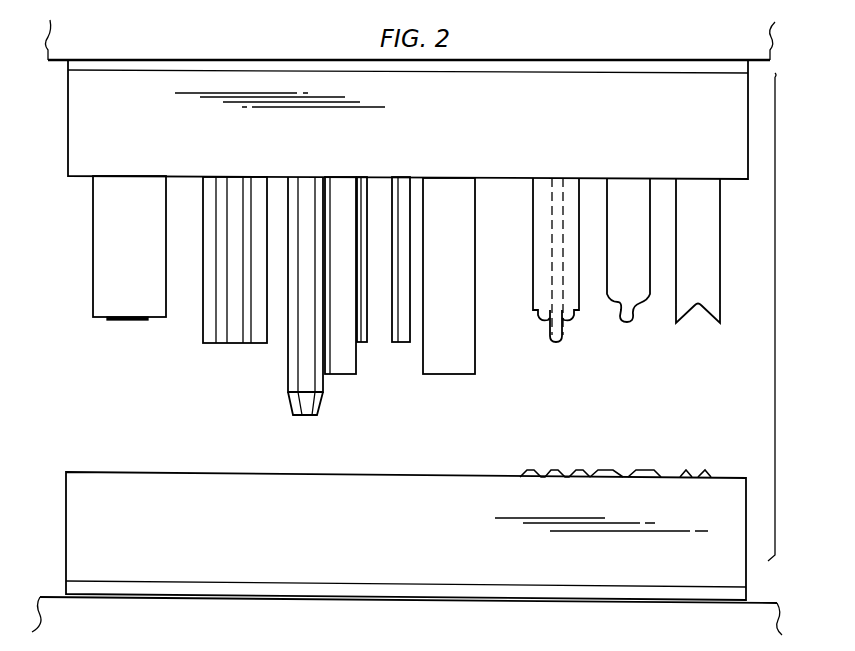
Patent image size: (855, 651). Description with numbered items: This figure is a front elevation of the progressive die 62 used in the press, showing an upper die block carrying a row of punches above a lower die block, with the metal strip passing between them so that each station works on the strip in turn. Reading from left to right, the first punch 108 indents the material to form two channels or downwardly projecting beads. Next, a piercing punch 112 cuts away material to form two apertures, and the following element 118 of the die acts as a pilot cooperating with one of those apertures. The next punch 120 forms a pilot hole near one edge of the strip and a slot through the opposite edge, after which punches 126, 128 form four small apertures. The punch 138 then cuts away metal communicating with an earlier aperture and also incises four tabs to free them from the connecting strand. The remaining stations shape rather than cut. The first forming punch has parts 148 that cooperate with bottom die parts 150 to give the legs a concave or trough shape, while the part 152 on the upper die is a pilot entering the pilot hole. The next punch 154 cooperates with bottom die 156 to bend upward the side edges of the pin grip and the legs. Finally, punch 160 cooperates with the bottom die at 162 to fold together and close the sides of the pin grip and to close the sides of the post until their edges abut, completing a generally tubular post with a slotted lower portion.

The die 62 is at (397, 538).
The punch 108 is at (100, 299).
The punch 112 is at (237, 344).
The pilot element 118 is at (322, 408).
The punch 120 is at (348, 375).
The punch 126 is at (363, 343).
The punch 128 is at (403, 343).
The punch 138 is at (477, 370).
The punch parts 148 is at (543, 320).
The pilot 152 is at (559, 342).
The punch 154 is at (647, 302).
The punch 160 is at (720, 316).
The bottom die parts 150 is at (545, 472).
The bottom die 156 is at (623, 475).
The bottom die 162 is at (698, 475).